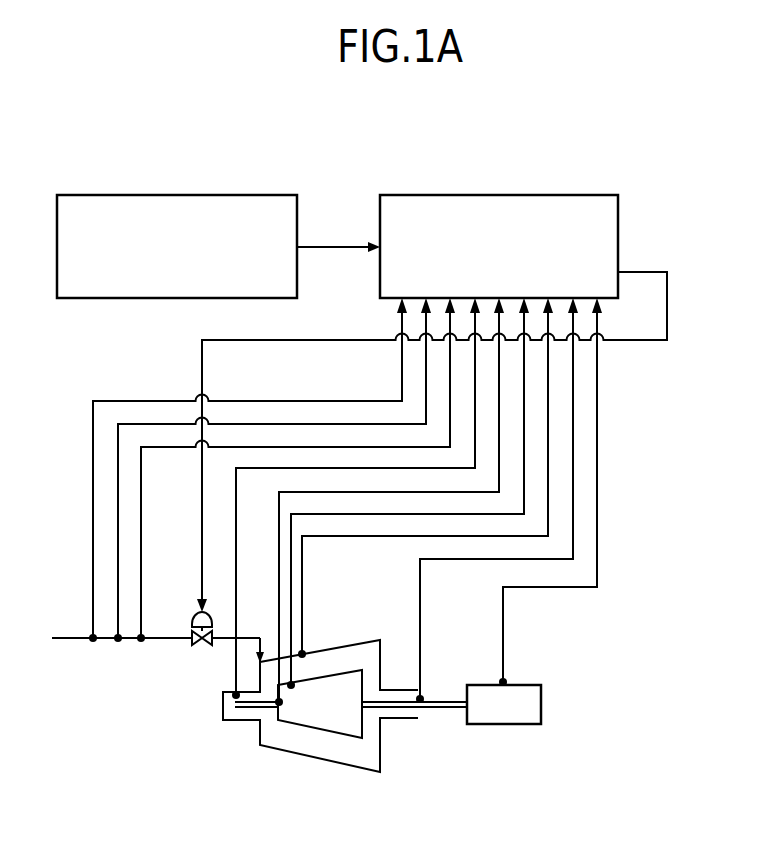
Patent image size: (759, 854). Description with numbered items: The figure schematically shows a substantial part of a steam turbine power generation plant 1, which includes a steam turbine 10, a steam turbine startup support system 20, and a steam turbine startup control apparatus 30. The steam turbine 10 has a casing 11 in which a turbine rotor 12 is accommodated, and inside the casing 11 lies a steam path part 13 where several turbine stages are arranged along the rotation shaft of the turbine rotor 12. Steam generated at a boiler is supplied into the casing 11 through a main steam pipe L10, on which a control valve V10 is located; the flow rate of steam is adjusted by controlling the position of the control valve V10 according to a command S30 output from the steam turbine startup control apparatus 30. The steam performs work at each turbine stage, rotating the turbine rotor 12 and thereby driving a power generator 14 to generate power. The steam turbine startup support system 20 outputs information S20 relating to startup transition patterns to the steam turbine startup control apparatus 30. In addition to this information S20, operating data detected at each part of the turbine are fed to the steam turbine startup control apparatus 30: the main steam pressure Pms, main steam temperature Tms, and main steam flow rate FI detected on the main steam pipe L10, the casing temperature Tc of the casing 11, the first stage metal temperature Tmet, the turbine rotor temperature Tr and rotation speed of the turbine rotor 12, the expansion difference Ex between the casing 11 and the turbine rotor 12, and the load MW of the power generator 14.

The steam turbine power generation plant 1 is at (378, 117).
The steam turbine 10 is at (339, 714).
The casing 11 is at (258, 736).
The turbine rotor 12 is at (419, 708).
The steam path part 13 is at (315, 730).
The power generator 14 is at (503, 725).
The steam turbine startup support system 20 is at (247, 195).
The steam turbine startup control apparatus 30 is at (555, 195).
The information relating to startup transition patterns S20 is at (344, 247).
The command S30 is at (667, 313).
The main steam pipe L10 is at (82, 642).
The control valve V10 is at (193, 646).
The main steam pressure Pms is at (93, 621).
The main steam temperature Tms is at (117, 643).
The main steam flow rate FI is at (141, 621).
The expansion difference Ex is at (236, 686).
The turbine rotor temperature Tr is at (279, 598).
The first stage metal temperature Tmet is at (291, 617).
The casing temperature Tc is at (302, 634).
The load MW is at (503, 640).